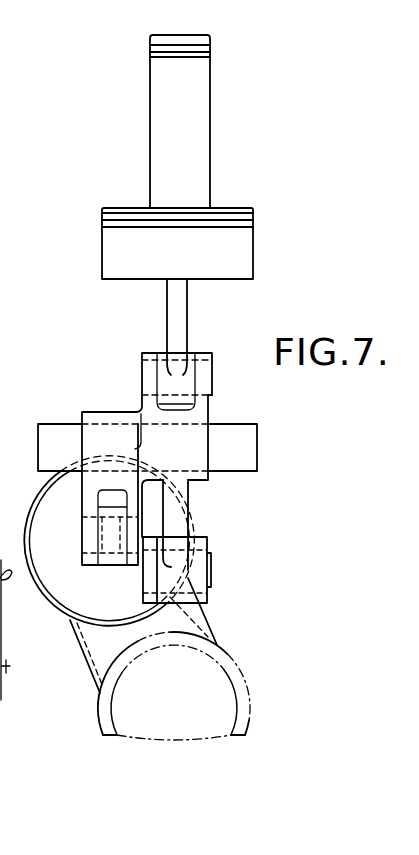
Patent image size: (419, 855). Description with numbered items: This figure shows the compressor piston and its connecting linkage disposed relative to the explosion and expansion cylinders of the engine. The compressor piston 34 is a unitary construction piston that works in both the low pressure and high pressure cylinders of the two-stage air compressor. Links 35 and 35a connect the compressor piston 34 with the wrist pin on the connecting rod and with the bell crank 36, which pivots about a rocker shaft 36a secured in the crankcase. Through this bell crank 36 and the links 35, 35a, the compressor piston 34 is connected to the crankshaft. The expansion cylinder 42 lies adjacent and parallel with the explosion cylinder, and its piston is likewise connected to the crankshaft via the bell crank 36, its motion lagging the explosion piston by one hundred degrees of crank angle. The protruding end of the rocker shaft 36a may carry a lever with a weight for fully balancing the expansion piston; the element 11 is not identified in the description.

The compressor piston 34 is at (238, 255).
The link 35 is at (177, 313).
The link 35a is at (180, 517).
The bell crank 36 is at (210, 407).
The rocker shaft 36a is at (250, 447).
The expansion cylinder 42 is at (65, 595).
The tubular frame member 11 is at (230, 672).